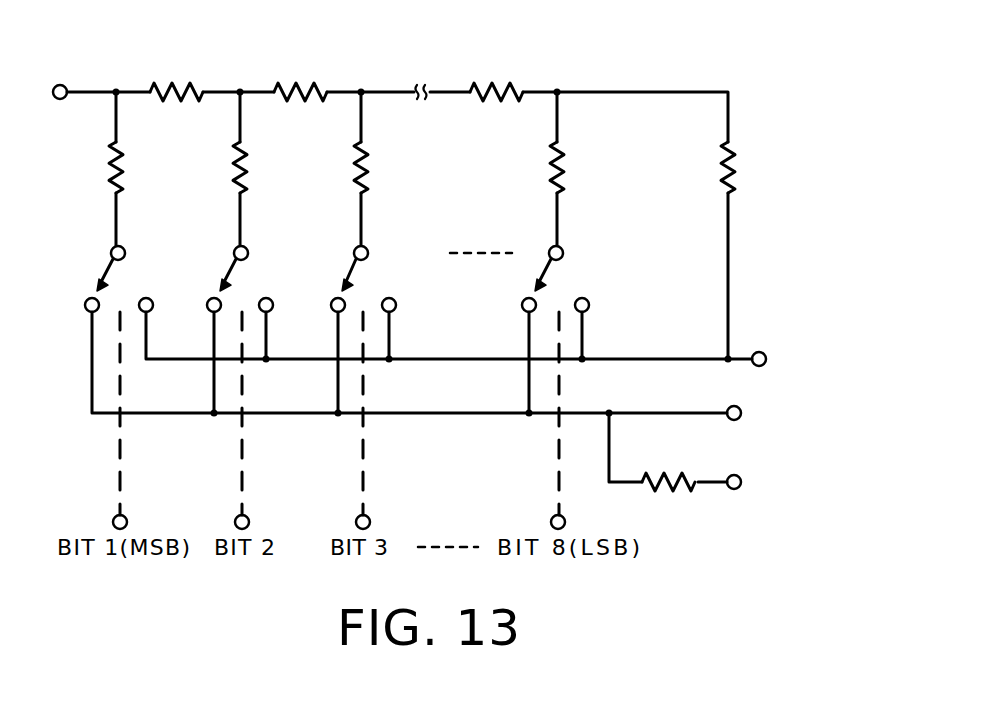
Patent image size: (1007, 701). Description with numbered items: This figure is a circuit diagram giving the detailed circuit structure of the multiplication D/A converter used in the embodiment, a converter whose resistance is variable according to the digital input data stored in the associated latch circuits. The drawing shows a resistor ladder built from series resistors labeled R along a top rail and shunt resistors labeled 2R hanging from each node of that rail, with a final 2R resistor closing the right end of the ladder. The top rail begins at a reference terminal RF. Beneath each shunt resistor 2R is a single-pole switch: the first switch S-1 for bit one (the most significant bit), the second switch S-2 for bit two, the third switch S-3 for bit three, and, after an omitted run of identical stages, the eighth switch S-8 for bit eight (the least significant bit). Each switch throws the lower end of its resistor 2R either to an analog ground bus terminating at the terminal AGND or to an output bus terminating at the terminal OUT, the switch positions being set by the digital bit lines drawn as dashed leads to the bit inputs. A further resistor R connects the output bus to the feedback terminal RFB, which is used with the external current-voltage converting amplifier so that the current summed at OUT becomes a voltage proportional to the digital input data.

The series ladder resistor R is at (181, 84).
The shunt ladder resistor 2R is at (126, 162).
The bit switch S-1 (MSB) S-1 is at (129, 275).
The bit switch S-2 is at (252, 275).
The bit switch S-3 is at (374, 275).
The bit switch S-8 (LSB) S-8 is at (568, 275).
The reference input terminal RF is at (40, 92).
The analog ground terminal AGND is at (797, 360).
The output terminal OUT is at (763, 414).
The feedback resistor terminal RFB is at (760, 483).